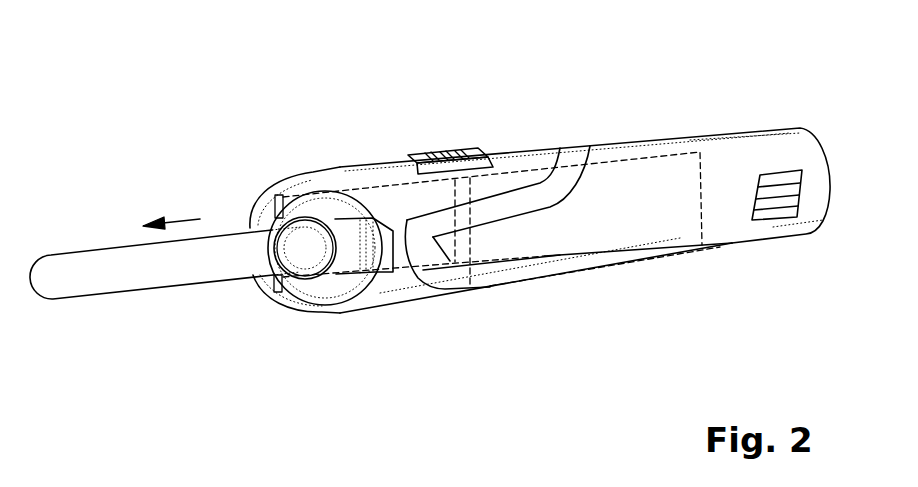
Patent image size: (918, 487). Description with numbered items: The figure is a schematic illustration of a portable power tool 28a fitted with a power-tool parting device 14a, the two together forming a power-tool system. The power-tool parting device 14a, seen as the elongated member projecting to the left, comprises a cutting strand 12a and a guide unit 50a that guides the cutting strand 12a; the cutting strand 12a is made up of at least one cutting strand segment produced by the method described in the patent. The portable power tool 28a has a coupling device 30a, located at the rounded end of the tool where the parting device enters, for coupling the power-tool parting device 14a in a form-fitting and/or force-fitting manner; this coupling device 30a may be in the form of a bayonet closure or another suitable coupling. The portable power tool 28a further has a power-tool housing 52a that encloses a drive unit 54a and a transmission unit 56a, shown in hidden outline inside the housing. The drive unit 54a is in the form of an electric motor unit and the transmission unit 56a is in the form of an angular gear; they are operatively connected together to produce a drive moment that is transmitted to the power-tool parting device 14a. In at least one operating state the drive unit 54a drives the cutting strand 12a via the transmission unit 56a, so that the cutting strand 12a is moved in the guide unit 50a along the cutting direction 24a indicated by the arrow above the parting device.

The cutting strand 12a is at (80, 299).
The power-tool parting device 14a is at (130, 189).
The cutting direction 24a is at (177, 218).
The portable power tool 28a is at (716, 84).
The coupling device 30a is at (309, 326).
The guide unit 50a is at (155, 280).
The power-tool housing 52a is at (630, 142).
The drive unit 54a is at (540, 285).
The transmission unit 56a is at (413, 287).